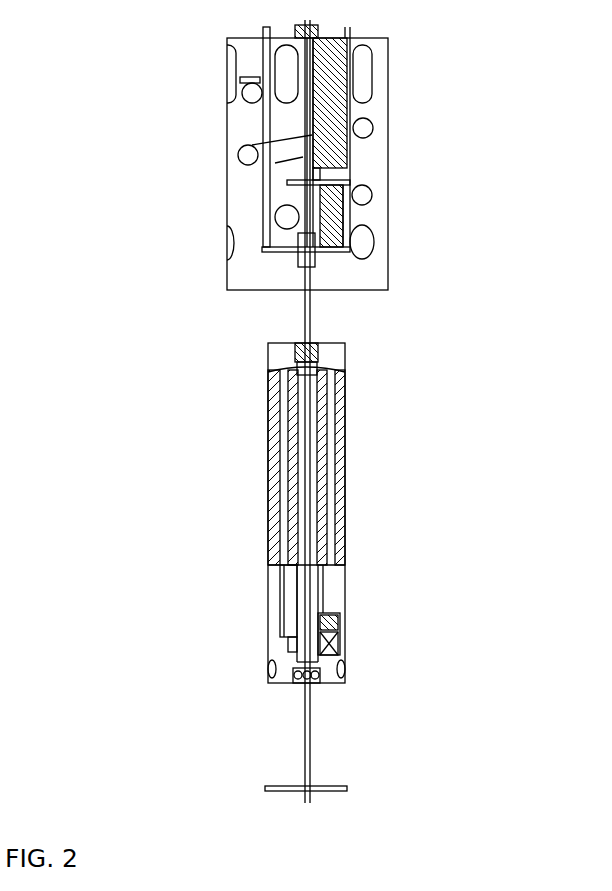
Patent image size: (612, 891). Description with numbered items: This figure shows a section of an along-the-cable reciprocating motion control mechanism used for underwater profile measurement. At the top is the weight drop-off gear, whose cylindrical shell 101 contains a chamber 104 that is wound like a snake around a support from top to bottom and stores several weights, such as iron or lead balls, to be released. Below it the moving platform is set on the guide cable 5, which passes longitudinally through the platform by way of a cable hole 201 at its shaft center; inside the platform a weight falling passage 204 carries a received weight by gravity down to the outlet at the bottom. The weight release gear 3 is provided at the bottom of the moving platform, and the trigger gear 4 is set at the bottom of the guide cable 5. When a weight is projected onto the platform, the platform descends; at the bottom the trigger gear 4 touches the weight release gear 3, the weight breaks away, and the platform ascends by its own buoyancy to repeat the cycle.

The shell 101 is at (386, 178).
The chamber 104 is at (347, 150).
The cable hole 201 is at (310, 468).
The weight falling passage 204 is at (282, 530).
The weight release gear 3 is at (335, 643).
The guide cable 5 is at (310, 737).
The trigger gear 4 is at (335, 786).